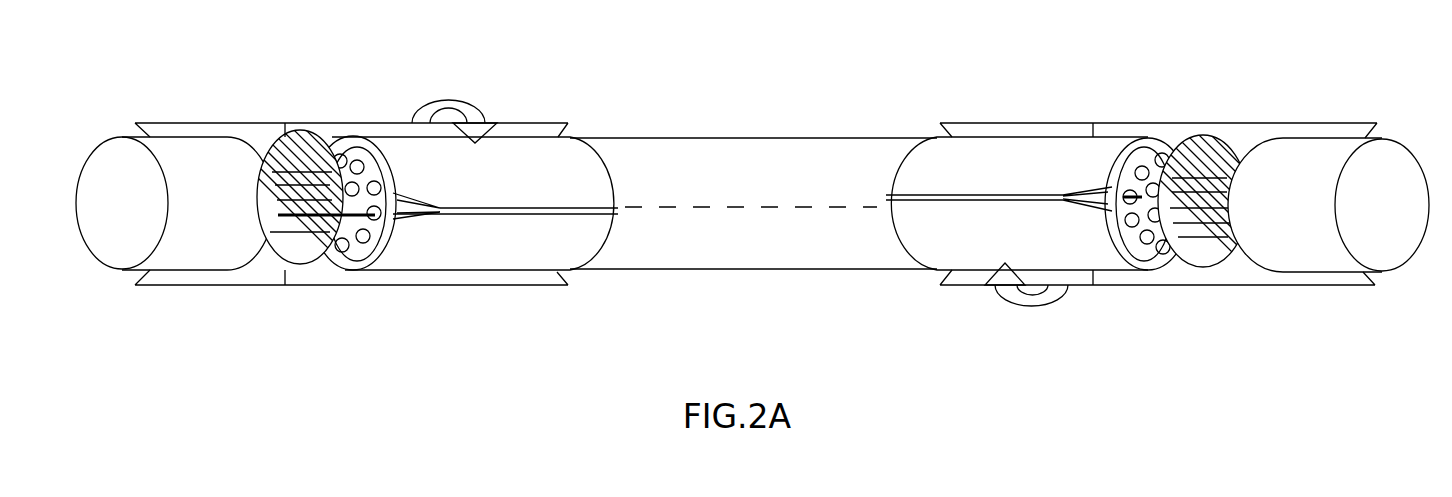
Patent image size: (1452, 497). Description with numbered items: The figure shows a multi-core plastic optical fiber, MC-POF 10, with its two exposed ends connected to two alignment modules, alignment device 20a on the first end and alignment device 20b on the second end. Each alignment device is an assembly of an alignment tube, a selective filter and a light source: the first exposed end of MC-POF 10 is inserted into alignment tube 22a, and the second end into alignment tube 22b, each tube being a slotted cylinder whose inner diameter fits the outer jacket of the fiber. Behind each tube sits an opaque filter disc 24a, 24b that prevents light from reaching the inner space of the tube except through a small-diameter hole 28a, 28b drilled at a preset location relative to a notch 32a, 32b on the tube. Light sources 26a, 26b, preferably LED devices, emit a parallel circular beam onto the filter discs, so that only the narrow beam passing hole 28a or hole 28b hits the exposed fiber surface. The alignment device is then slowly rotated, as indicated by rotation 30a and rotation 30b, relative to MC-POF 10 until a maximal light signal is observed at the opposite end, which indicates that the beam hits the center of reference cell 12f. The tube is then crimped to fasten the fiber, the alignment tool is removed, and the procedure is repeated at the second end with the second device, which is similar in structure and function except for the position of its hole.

The MC-POF 10 is at (760, 138).
The reference cell 12f is at (375, 213).
The alignment device 20a is at (379, 108).
The alignment device 20b is at (1192, 112).
The alignment tube 22a is at (503, 158).
The alignment tube 22b is at (942, 253).
The filter disc 24a is at (299, 263).
The filter disc 24b is at (1237, 262).
The light source 26a is at (222, 252).
The light source 26b is at (1332, 140).
The hole 28a is at (328, 225).
The hole 28b is at (1180, 188).
The rotation 30a is at (440, 100).
The rotation 30b is at (1047, 307).
The notch 32a is at (405, 215).
The notch 32b is at (1102, 185).